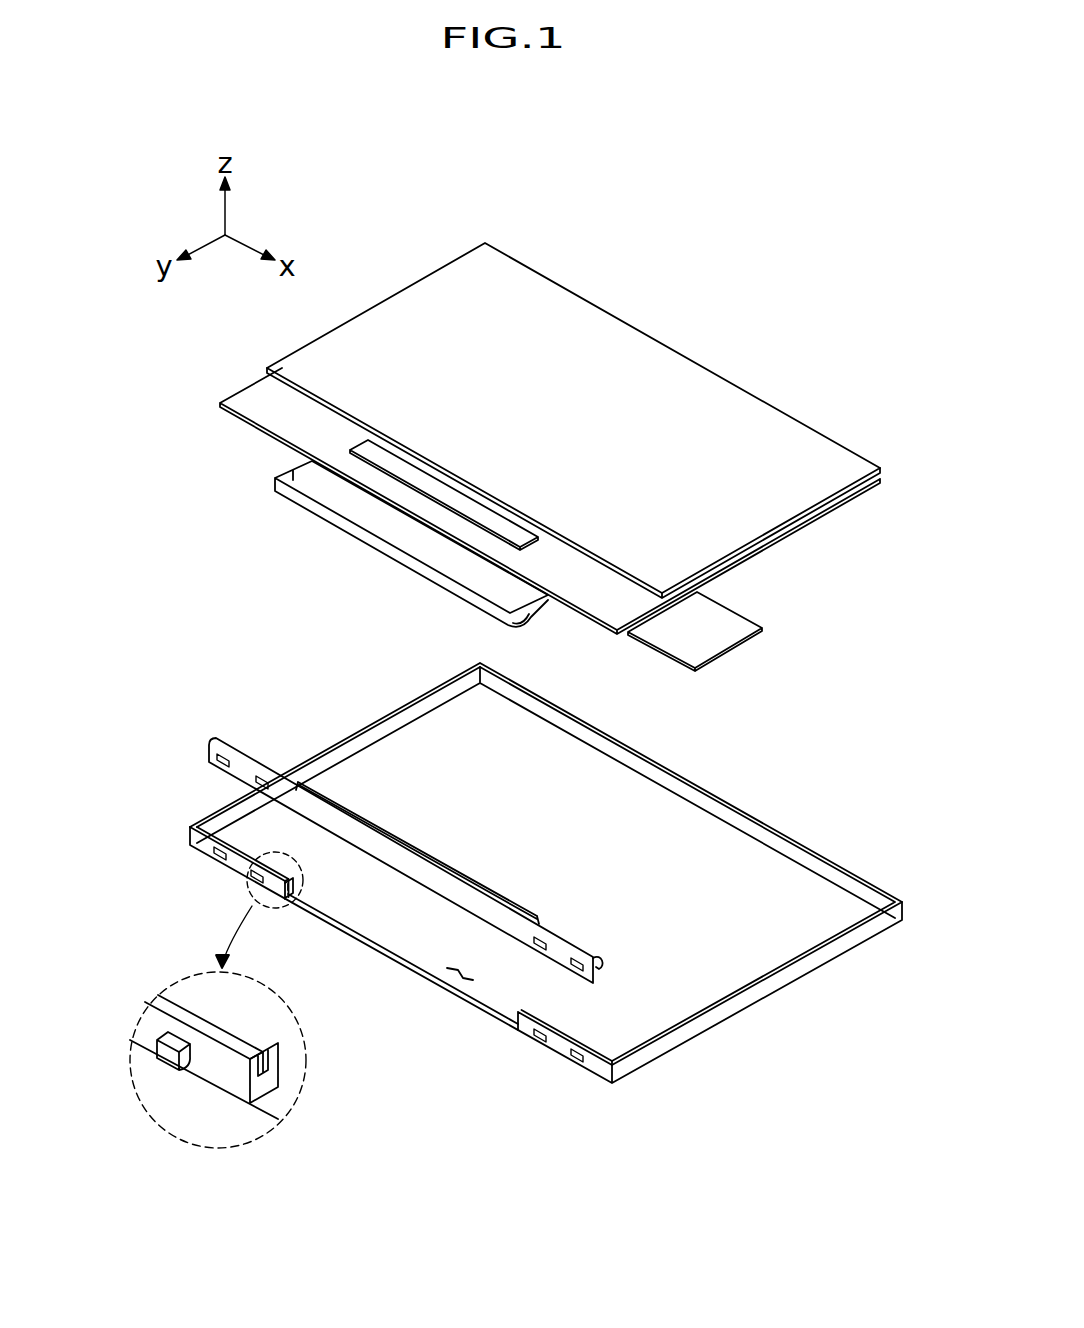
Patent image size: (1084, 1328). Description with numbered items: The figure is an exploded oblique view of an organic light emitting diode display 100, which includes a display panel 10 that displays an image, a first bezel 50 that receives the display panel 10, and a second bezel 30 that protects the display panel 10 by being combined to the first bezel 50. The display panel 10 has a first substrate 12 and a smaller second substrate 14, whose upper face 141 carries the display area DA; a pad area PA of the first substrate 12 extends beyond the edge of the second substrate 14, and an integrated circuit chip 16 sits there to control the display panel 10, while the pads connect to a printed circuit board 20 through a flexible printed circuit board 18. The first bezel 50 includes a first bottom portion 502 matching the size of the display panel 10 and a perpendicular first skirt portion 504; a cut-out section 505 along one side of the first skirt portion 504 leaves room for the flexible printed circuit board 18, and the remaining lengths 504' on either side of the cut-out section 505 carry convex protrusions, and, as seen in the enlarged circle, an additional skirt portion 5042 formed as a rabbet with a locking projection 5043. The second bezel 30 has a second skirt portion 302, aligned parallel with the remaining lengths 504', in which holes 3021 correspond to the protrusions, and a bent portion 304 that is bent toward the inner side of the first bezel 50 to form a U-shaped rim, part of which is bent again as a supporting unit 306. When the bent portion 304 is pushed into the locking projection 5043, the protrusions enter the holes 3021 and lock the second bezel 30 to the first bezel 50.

The organic light emitting diode display 100 is at (360, 213).
The display panel 10 is at (795, 413).
The first substrate 12 is at (813, 517).
The second substrate 14 is at (850, 488).
The display area surface 141 is at (578, 318).
The integrated circuit chip 16 is at (380, 453).
The flexible printed circuit board 18 is at (393, 534).
The printed circuit board 20 is at (713, 635).
The second bezel 30 is at (423, 842).
The second skirt portion 302 is at (460, 893).
The hole 3021 is at (535, 945).
The bent portion 304 is at (605, 963).
The supporting unit 306 is at (470, 877).
The first bezel 50 is at (713, 768).
The first bottom portion 502 is at (607, 810).
The first skirt portion 504 is at (546, 873).
The remaining lengths of first skirt portion 504' is at (235, 1015).
The additional skirt portion 5042 is at (210, 1033).
The locking projection 5043 is at (280, 1063).
The cut-out section 505 is at (443, 973).